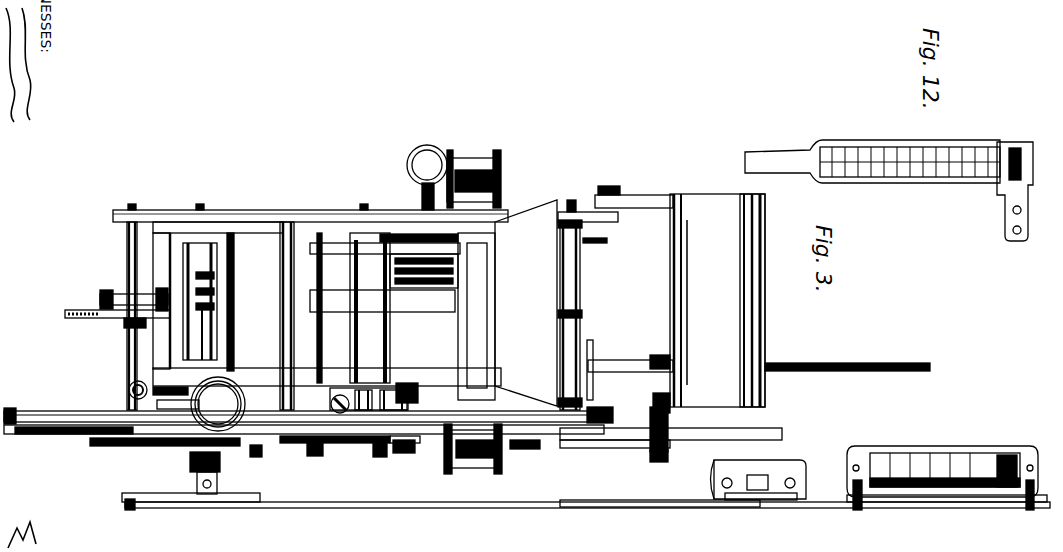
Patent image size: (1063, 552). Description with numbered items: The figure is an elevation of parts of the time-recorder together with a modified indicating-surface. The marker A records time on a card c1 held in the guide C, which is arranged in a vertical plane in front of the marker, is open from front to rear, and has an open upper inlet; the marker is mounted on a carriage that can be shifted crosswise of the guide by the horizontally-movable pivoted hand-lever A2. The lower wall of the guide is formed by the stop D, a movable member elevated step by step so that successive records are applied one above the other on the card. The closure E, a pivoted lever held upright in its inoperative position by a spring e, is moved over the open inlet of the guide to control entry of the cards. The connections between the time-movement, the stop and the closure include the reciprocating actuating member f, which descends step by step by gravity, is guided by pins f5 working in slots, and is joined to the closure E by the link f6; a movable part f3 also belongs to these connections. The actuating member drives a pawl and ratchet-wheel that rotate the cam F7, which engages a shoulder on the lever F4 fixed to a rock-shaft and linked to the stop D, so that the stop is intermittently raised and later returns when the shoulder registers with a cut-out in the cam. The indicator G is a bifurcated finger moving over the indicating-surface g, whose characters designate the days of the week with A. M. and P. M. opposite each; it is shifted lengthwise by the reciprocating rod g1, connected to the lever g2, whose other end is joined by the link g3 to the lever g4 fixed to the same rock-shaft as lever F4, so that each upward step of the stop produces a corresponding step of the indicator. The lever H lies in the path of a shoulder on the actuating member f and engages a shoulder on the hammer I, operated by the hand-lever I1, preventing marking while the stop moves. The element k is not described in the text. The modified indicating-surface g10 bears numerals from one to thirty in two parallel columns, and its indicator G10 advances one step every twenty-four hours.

In FIG. 3, the stop D is at (200, 243).
In FIG. 3, the lever F4 is at (100, 299).
In FIG. 3, the cam F7 is at (90, 316).
In FIG. 3, the hammer I is at (472, 258).
In FIG. 3, the hand-lever A2 is at (424, 190).
In FIG. 3, the guide C is at (540, 245).
In FIG. 3, the closure E is at (716, 238).
In FIG. 12, the indicating-surface g10 is at (920, 173).
In FIG. 12, the indicator G10 is at (1010, 198).
In FIG. 3, the marker A is at (440, 286).
In FIG. 3, the card c1 is at (398, 348).
In FIG. 3, the lever H is at (354, 410).
In FIG. 3, the actuating member f is at (362, 444).
In FIG. 3, the pins f5 is at (190, 446).
In FIG. 3, the block k is at (410, 453).
In FIG. 3, the spring e is at (552, 447).
In FIG. 3, the link f6 is at (598, 446).
In FIG. 3, the movable part f3 is at (692, 433).
In FIG. 3, the link g3 is at (662, 514).
In FIG. 3, the lever g2 is at (782, 500).
In FIG. 3, the indicating-surface g is at (940, 454).
In FIG. 3, the indicator G is at (1000, 458).
In FIG. 3, the reciprocating rod g1 is at (947, 500).
In FIG. 3, the hand-lever I1 is at (215, 405).
In FIG. 3, the lever g4 is at (160, 494).